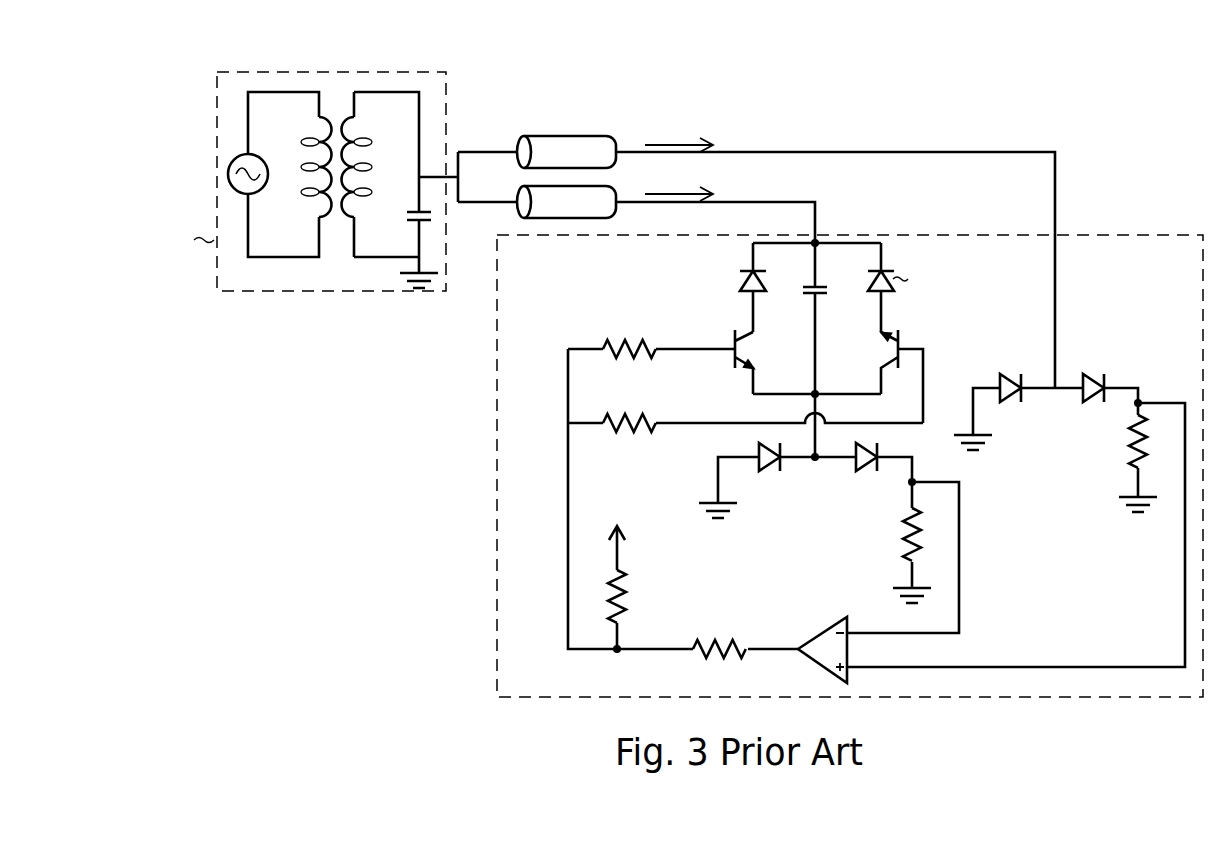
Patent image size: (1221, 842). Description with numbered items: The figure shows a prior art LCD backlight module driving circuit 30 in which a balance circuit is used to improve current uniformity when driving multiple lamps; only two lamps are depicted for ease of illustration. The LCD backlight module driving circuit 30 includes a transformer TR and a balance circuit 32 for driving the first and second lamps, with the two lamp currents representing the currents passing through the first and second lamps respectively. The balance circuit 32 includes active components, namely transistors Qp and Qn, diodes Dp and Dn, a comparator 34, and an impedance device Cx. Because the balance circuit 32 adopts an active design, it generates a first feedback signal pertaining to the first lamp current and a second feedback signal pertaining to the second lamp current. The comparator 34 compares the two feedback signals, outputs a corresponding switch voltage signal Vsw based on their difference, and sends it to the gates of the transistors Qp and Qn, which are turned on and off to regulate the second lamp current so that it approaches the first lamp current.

The LCD backlight module driving circuit 30 is at (1085, 112).
The balance circuit 32 is at (495, 465).
The comparator 34 is at (822, 632).